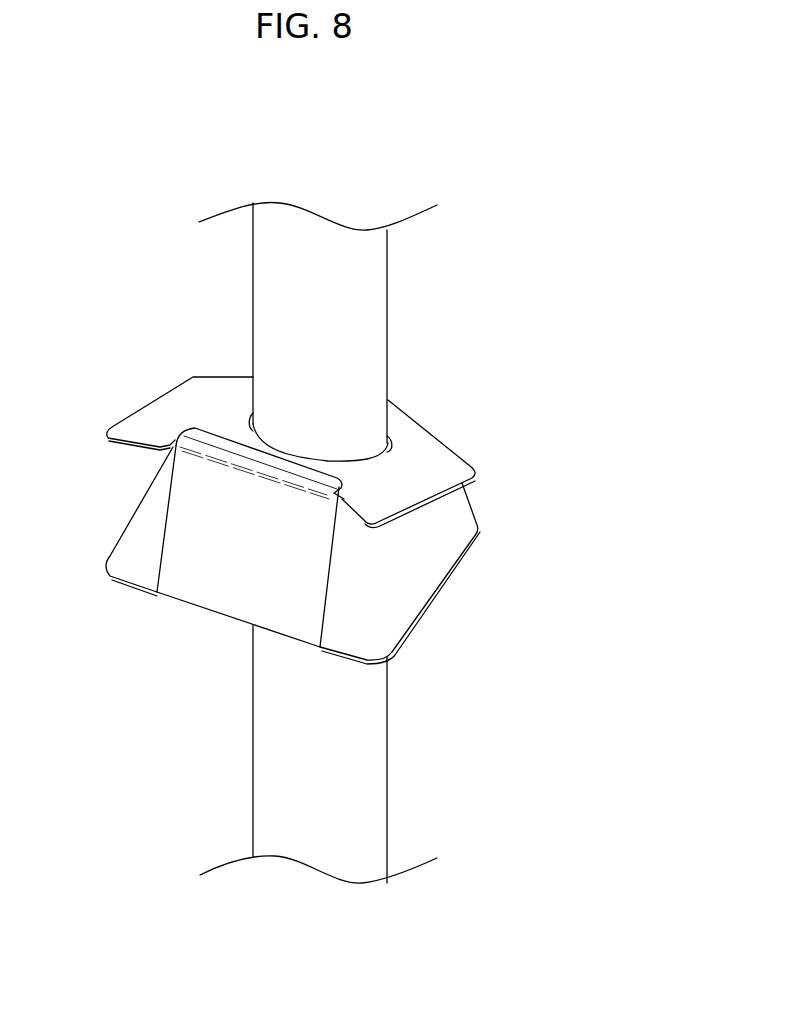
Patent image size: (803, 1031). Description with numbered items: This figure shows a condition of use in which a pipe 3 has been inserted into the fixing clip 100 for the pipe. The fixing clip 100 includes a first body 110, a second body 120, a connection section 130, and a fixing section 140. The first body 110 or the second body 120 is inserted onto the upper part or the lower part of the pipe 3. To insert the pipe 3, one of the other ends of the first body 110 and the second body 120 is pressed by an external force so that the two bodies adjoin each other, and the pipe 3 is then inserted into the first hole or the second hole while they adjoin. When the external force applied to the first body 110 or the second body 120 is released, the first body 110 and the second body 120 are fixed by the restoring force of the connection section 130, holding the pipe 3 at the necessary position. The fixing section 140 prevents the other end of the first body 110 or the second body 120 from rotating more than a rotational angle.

The pipe 3 is at (363, 330).
The fixing clip 100 is at (500, 583).
The first body 110 is at (400, 617).
The second body 120 is at (185, 405).
The connection section 130 is at (430, 432).
The fixing section 140 is at (235, 585).